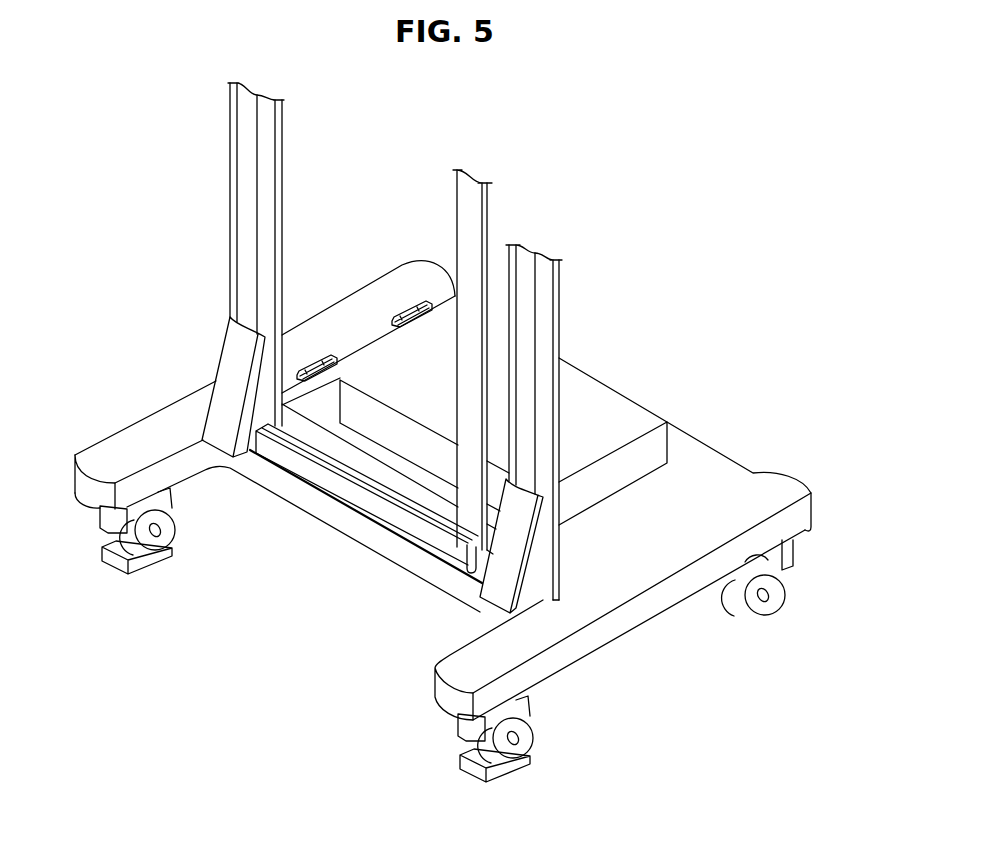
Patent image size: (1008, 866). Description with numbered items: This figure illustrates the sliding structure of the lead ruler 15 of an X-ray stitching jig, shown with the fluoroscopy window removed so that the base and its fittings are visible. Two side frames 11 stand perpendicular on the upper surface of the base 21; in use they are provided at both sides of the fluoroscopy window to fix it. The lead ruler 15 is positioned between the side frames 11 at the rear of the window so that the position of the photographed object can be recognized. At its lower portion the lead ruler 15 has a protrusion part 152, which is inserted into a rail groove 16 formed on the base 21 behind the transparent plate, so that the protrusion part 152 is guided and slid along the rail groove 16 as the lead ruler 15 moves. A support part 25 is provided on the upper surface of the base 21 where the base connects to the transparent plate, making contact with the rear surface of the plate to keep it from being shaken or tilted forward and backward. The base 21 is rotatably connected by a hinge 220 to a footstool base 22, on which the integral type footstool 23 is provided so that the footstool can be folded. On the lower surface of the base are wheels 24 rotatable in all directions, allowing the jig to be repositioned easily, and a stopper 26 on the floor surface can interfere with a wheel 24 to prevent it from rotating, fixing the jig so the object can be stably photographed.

The side frame 11 is at (248, 162).
The lead ruler 15 is at (464, 213).
The rail groove 16 is at (377, 493).
The base 21 is at (137, 436).
The footstool base 22 is at (697, 463).
The integral type footstool 23 is at (607, 407).
The wheel 24 is at (153, 508).
The support part 25 is at (233, 366).
The stopper 26 is at (112, 562).
The protrusion part 152 is at (467, 556).
The hinge 220 is at (323, 357).